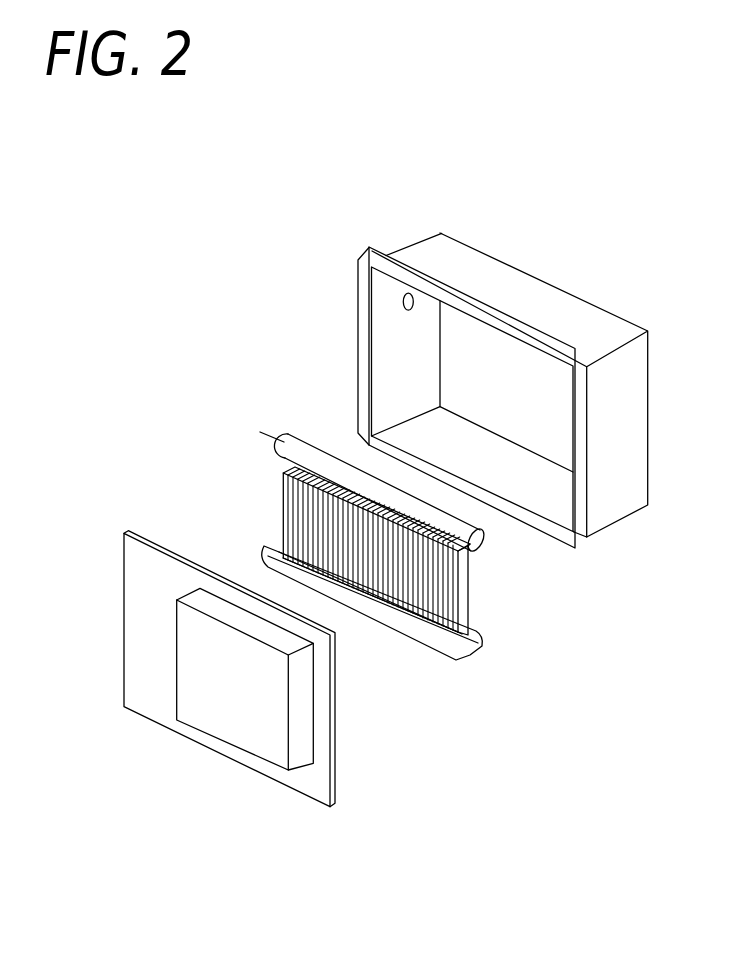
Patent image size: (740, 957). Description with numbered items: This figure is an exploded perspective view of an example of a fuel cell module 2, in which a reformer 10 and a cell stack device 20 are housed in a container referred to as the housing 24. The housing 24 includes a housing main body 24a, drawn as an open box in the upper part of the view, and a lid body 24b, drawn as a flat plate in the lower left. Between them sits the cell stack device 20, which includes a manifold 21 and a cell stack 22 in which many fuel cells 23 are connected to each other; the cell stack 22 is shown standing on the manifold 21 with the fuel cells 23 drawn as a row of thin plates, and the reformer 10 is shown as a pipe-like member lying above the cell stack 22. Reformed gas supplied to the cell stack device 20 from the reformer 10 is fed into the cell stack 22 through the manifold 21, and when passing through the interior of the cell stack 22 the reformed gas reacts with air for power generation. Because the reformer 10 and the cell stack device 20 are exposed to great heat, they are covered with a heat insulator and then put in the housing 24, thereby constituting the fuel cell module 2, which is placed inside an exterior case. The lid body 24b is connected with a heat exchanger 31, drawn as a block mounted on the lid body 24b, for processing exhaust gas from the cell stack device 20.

The fuel cell module 2 is at (225, 177).
The reformer 10 is at (323, 464).
The cell stack device 20 is at (232, 433).
The manifold 21 is at (385, 630).
The cell stack 22 is at (290, 516).
The fuel cells 23 is at (458, 597).
The housing 24 is at (613, 700).
The housing main body 24a is at (577, 547).
The lid body 24b is at (335, 737).
The heat exchanger 31 is at (227, 713).